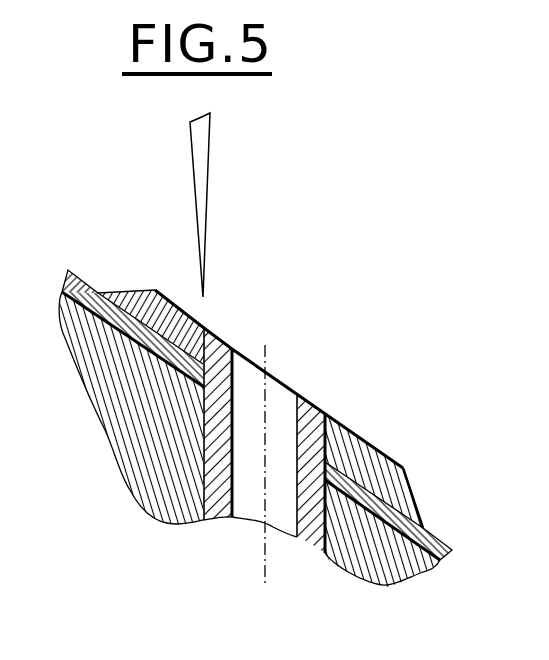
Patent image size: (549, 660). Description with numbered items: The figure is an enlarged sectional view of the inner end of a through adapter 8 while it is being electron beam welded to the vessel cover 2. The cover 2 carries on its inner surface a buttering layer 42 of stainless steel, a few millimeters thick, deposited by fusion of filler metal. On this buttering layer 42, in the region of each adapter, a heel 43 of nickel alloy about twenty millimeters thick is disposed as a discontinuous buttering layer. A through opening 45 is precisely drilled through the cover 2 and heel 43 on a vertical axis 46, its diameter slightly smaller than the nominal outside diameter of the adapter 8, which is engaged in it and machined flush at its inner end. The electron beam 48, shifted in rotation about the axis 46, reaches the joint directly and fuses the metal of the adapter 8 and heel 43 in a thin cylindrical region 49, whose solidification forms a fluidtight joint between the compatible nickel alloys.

The cover 2 is at (178, 512).
The through adapter 8 is at (233, 355).
The buttering layer 42 is at (75, 270).
The heel 43 is at (150, 290).
The through opening 45 is at (203, 452).
The vertical axis 46 is at (265, 585).
The electron beam 48 is at (207, 150).
The fusion region 49 is at (207, 327).